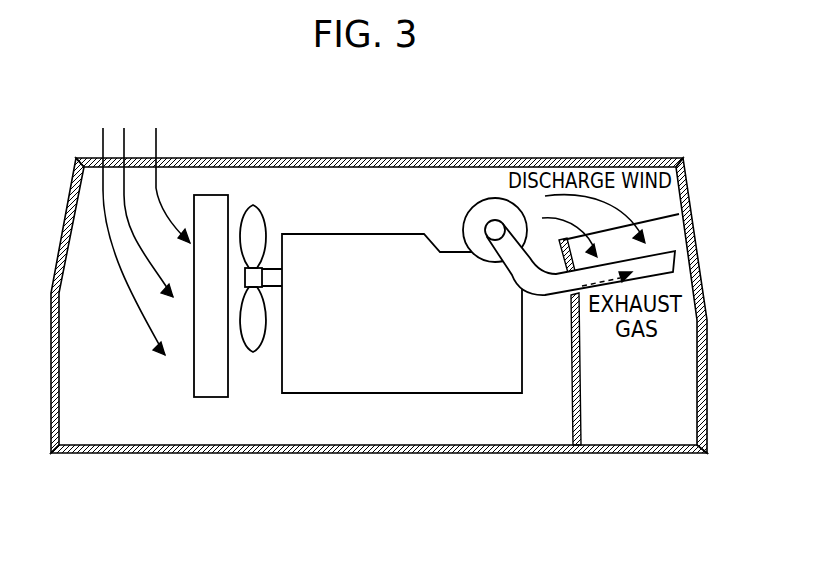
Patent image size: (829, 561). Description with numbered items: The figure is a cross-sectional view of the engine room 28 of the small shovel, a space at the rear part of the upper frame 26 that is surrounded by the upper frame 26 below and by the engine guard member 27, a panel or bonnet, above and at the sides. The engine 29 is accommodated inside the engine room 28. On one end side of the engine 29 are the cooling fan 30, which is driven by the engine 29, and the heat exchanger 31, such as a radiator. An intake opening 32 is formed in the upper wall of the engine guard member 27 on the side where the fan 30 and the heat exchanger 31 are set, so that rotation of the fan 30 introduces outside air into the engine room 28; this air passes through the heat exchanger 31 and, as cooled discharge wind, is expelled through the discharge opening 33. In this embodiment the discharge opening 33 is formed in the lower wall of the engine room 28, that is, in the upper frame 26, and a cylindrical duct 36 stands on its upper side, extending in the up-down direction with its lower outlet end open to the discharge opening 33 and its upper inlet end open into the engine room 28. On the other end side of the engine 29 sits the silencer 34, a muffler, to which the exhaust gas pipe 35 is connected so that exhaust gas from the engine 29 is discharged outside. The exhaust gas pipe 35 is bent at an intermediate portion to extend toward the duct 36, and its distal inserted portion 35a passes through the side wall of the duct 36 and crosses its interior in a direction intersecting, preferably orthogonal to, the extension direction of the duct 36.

The upper frame 26 is at (263, 452).
The engine guard member 27 is at (400, 158).
The engine room 28 is at (413, 435).
The engine 29 is at (349, 234).
The cooling fan 30 is at (250, 204).
The heat exchanger 31 is at (208, 195).
The intake opening 32 is at (131, 162).
The discharge opening 33 is at (655, 450).
The silencer 34 is at (491, 198).
The exhaust gas pipe 35 is at (548, 297).
The inserted portion 35a is at (655, 250).
The duct 36 is at (573, 417).